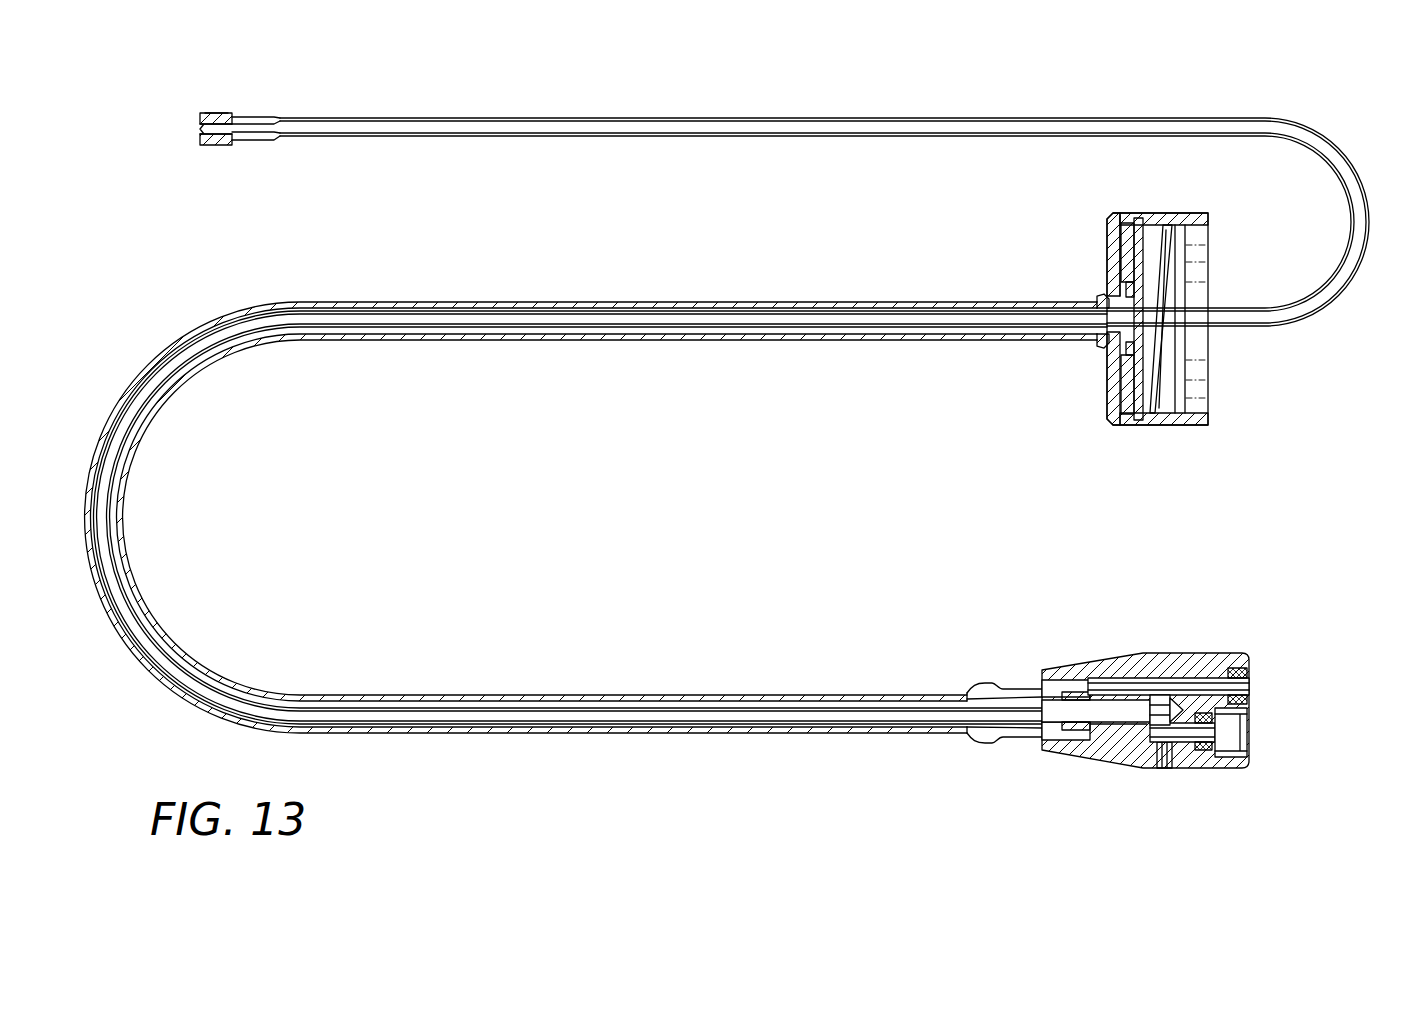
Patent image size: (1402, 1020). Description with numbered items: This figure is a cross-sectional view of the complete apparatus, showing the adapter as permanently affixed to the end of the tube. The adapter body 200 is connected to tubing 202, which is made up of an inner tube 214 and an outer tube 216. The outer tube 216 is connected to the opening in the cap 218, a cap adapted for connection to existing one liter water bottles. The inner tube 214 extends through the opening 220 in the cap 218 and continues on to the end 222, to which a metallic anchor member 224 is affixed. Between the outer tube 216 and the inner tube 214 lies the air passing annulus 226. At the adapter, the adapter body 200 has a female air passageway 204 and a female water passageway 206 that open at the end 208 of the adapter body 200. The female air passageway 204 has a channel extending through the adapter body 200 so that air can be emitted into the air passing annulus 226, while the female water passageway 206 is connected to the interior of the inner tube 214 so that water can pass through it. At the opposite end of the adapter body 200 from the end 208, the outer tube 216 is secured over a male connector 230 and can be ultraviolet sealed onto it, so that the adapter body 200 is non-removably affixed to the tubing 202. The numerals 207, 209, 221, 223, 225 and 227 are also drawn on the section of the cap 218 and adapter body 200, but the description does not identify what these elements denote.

The adapter body 200 is at (1155, 652).
The tubing 202 is at (837, 342).
The female air passageway 204 is at (1247, 684).
The female water passageway 206 is at (1239, 730).
The bore / passage 207 is at (1138, 302).
The end of the adapter body 208 is at (1250, 758).
The seal 209 is at (1247, 699).
The inner tube 214 is at (607, 318).
The outer tube 216 is at (678, 337).
The cap 218 is at (1107, 268).
The opening 220 is at (1100, 347).
The connector wall 221 is at (1128, 215).
The end 222 is at (200, 130).
The lower insert 223 is at (1130, 410).
The metallic anchor member 224 is at (220, 111).
The upper insert 225 is at (1145, 226).
The air passing annulus 226 is at (502, 334).
The tapered member 227 is at (1162, 368).
The male connector 230 is at (990, 740).